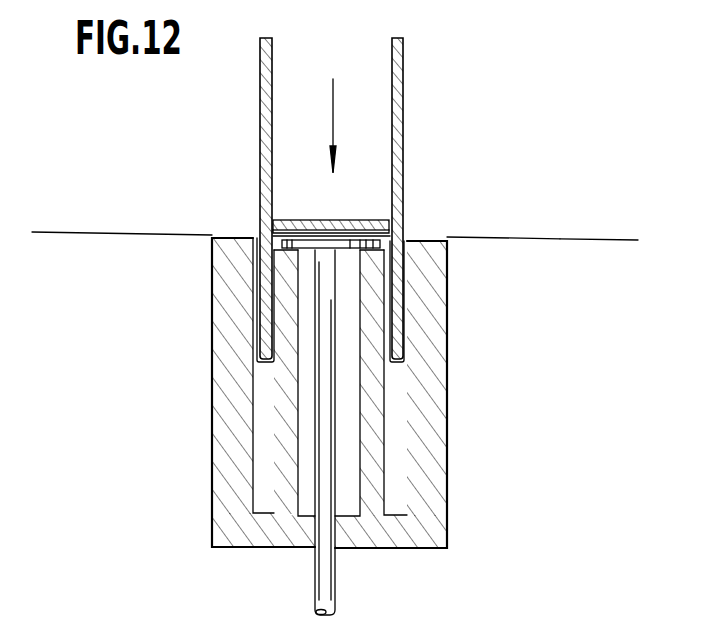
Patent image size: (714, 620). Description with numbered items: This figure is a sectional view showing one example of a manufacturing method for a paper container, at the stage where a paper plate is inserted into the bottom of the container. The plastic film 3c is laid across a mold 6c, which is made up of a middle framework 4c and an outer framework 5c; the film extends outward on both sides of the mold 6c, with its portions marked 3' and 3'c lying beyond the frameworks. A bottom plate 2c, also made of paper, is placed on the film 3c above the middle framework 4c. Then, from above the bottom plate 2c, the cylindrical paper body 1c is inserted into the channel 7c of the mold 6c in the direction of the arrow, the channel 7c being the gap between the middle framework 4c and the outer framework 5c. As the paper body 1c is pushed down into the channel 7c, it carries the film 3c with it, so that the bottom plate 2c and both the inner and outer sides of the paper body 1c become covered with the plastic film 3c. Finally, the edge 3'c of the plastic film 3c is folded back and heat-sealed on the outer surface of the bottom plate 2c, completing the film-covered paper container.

The paper body 1c is at (404, 103).
The bottom plate 2c is at (343, 220).
The reference plane 3' is at (122, 205).
The plastic film 3c is at (514, 236).
The edge of the plastic film 3'c is at (604, 212).
The middle framework 4c is at (285, 410).
The outer framework 5c is at (220, 366).
The mold 6c is at (452, 530).
The channel 7c is at (262, 487).